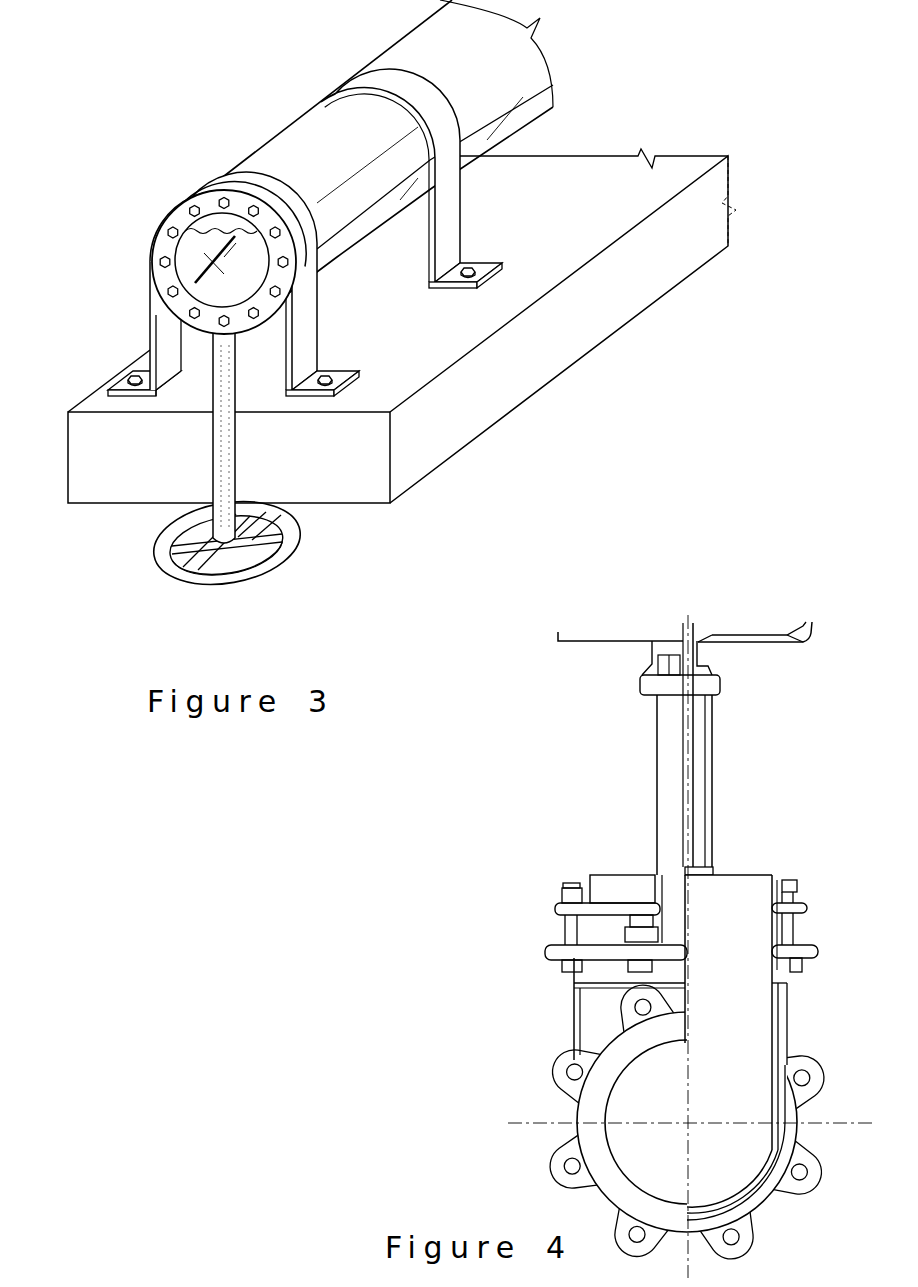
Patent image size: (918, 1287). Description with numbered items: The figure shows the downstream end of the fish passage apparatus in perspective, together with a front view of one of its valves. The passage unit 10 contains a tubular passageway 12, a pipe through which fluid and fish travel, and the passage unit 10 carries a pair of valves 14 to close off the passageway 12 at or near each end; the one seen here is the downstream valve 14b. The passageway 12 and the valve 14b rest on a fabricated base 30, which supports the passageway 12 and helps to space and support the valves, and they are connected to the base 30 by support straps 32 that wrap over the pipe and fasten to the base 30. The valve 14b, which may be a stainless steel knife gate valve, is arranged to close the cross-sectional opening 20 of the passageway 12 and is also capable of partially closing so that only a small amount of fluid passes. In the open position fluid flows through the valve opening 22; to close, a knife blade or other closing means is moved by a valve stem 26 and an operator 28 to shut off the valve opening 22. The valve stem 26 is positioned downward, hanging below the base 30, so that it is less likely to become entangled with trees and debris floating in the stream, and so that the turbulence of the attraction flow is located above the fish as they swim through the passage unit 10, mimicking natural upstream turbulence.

In FIG. 3, the passage unit 10 is at (128, 198).
In FIG. 3, the passageway 12 is at (290, 146).
In FIG. 3, the valve 14 is at (137, 337).
In FIG. 4, the valve 14 is at (538, 1068).
In FIG. 3, the downstream valve 14b is at (133, 150).
In FIG. 3, the cross-sectional opening 20 is at (220, 214).
In FIG. 3, the valve opening 22 is at (200, 262).
In FIG. 4, the valve opening 22 is at (660, 1153).
In FIG. 3, the valve stem 26 is at (228, 463).
In FIG. 3, the operator 28 is at (158, 554).
In FIG. 4, the operator 28 is at (684, 772).
In FIG. 3, the base 30 is at (93, 484).
In FIG. 4, the base 30 is at (632, 637).
In FIG. 3, the support straps 32 is at (437, 237).